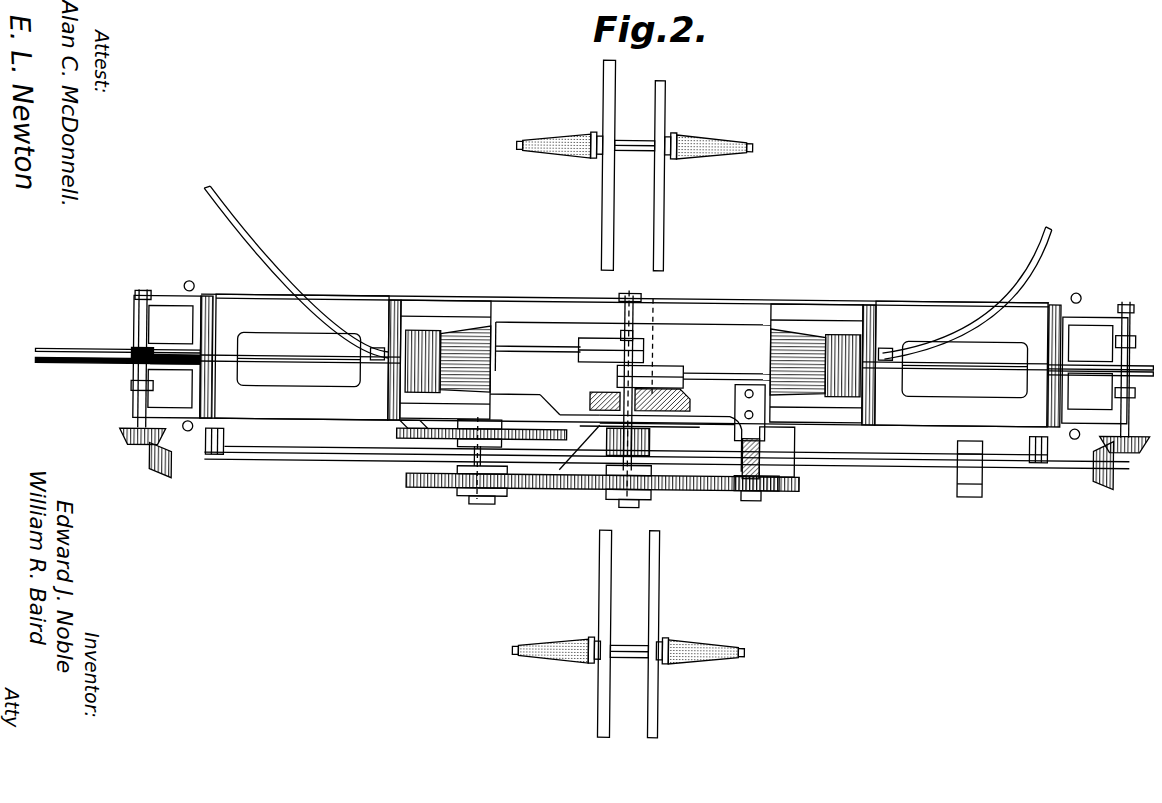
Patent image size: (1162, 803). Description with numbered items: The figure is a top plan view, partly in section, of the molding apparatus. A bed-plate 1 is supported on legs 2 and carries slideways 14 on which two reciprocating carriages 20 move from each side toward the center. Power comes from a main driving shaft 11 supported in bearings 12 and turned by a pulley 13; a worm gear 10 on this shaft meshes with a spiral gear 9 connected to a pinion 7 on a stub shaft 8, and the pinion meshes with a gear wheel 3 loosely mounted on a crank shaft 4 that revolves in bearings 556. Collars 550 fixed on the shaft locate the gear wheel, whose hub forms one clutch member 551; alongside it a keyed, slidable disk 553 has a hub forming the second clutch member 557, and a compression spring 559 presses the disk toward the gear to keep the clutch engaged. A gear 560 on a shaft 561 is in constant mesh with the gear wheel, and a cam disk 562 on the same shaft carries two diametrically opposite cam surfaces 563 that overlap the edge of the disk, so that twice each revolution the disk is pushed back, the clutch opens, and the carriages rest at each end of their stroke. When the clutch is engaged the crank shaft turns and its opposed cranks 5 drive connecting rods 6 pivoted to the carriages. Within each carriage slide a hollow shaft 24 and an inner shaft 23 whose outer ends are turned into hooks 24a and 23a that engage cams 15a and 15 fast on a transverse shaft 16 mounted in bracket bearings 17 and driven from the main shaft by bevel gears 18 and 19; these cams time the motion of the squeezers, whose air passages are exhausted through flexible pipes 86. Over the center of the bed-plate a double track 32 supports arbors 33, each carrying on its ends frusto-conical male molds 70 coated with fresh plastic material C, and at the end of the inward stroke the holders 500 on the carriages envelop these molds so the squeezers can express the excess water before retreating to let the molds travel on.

The bed-plate 1 is at (345, 423).
The legs 2 is at (205, 432).
The gear wheel 3 is at (695, 491).
The crank shaft 4 is at (640, 297).
The cranks 5 is at (585, 362).
The connecting rods 6 is at (553, 353).
The pinion 7 is at (782, 484).
The stub shaft 8 is at (752, 500).
The spiral gear 9 is at (700, 425).
The worm gear 10 is at (766, 492).
The main driving shaft 11 is at (285, 464).
The bearings 12 is at (214, 460).
The pulley 13 is at (970, 494).
The slideways 14 is at (632, 362).
The cam 15 is at (134, 372).
The cam 15a is at (134, 354).
The transverse shaft 16 is at (142, 295).
The bracket bearings 17 is at (165, 303).
The bevel gear 18 is at (128, 443).
The bevel gear 19 is at (158, 475).
The carriage 20 is at (631, 360).
The shaft 23 is at (95, 372).
The hooked end of shaft 23 23a is at (45, 370).
The hollow shaft 24 is at (308, 366).
The hooked end of shaft 24 24a is at (48, 354).
The double track 32 is at (652, 208).
The arbor 33 is at (630, 140).
The male mold 70 is at (570, 158).
The flexible pipe 86 is at (235, 237).
The holder 500 is at (470, 340).
The collar 550 is at (618, 500).
The clutch member 551 is at (650, 450).
The disk 553 is at (570, 478).
The bearings 556 is at (700, 392).
The clutch member 557 is at (645, 436).
The compression spring 559 is at (608, 392).
The gear 560 is at (462, 492).
The shaft 561 is at (483, 507).
The cam disk 562 is at (430, 440).
The cam surfaces 563 is at (405, 432).
The plastic material C is at (560, 136).